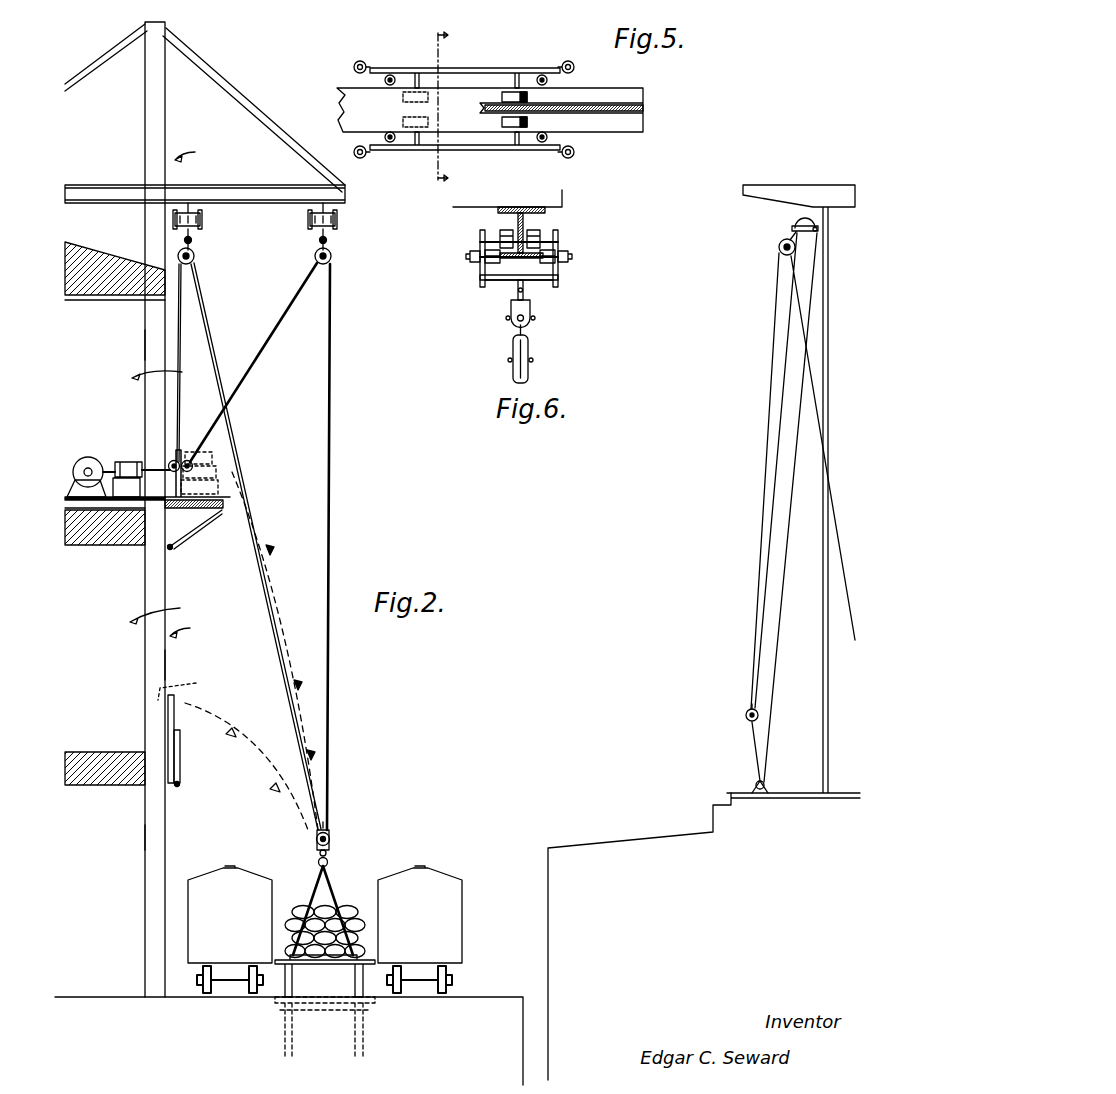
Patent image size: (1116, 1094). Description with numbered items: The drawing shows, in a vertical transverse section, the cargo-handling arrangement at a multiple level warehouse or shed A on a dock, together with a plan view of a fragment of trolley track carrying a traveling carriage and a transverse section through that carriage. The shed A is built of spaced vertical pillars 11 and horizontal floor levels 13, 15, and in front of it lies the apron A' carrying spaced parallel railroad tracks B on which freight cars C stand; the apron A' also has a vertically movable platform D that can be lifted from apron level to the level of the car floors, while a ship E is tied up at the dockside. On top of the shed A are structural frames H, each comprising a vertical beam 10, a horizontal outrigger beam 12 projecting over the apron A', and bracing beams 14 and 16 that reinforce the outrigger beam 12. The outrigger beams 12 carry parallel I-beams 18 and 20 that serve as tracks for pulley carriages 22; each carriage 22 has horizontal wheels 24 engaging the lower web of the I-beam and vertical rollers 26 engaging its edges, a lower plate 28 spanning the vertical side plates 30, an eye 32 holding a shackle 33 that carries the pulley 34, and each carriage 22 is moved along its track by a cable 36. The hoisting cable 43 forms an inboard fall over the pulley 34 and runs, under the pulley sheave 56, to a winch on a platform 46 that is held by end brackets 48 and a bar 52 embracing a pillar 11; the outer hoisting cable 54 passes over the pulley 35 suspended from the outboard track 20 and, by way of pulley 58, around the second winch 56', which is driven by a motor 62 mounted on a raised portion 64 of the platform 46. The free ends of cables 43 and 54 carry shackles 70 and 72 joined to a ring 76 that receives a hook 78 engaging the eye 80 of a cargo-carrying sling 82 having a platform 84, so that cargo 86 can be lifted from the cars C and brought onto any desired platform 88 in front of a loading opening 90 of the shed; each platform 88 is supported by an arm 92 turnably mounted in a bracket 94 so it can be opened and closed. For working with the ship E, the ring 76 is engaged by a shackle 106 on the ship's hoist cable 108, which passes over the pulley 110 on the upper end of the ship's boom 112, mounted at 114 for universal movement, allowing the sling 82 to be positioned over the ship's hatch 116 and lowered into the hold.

In FIG. 2, the vertical beam 10 is at (143, 126).
In FIG. 2, the vertical pillar 11 is at (145, 838).
In FIG. 2, the horizontal outrigger beam 12 is at (250, 202).
In FIG. 6, the horizontal outrigger beam 12 is at (565, 200).
In FIG. 2, the horizontal floor level 13 is at (112, 786).
In FIG. 2, the bracing beam 14 is at (266, 147).
In FIG. 2, the horizontal floor level 15 is at (138, 545).
In FIG. 2, the bracing beam 16 is at (95, 90).
In FIG. 2, the inner I-beam track 18 is at (202, 218).
In FIG. 5, the inner I-beam track 18 is at (590, 95).
In FIG. 6, the inner I-beam track 18 is at (495, 210).
In FIG. 2, the outboard I-beam track 20 is at (337, 214).
In FIG. 5, the pulley carriage 22 is at (403, 66).
In FIG. 6, the pulley carriage 22 is at (555, 228).
In FIG. 5, the horizontal wheel 24 is at (500, 121).
In FIG. 6, the horizontal wheel 24 is at (500, 232).
In FIG. 5, the vertical roller 26 is at (393, 143).
In FIG. 6, the vertical roller 26 is at (483, 268).
In FIG. 5, the lower plate 28 is at (488, 150).
In FIG. 6, the lower plate 28 is at (505, 277).
In FIG. 6, the vertical side plate 30 is at (558, 278).
In FIG. 6, the eye 32 is at (525, 296).
In FIG. 6, the shackle 33 is at (530, 322).
In FIG. 2, the pulley 34 is at (195, 256).
In FIG. 6, the pulley 34 is at (512, 350).
In FIG. 2, the pulley 35 is at (332, 256).
In FIG. 6, the cable 36 is at (482, 288).
In FIG. 2, the hoisting cable 43 is at (284, 708).
In FIG. 2, the platform 46 is at (96, 510).
In FIG. 2, the end bracket 48 is at (124, 512).
In FIG. 2, the bar 52 is at (185, 478).
In FIG. 2, the outer hoisting cable 54 is at (329, 548).
In FIG. 2, the pulley sheave 56 is at (176, 442).
In FIG. 2, the second winch 56' is at (85, 461).
In FIG. 2, the pulley 58 is at (192, 462).
In FIG. 2, the motor 62 is at (120, 460).
In FIG. 2, the raised portion 64 is at (116, 462).
In FIG. 2, the shackle 70 is at (314, 838).
In FIG. 2, the shackle 72 is at (327, 830).
In FIG. 2, the ring 76 is at (331, 840).
In FIG. 2, the hook 78 is at (318, 852).
In FIG. 2, the eye 80 is at (328, 862).
In FIG. 2, the cargo-carrying sling 82 is at (338, 900).
In FIG. 2, the platform 84 is at (362, 956).
In FIG. 2, the cargo 86 is at (220, 484).
In FIG. 2, the platform 88 is at (225, 505).
In FIG. 2, the loading opening 90 is at (168, 490).
In FIG. 2, the supporting arm 92 is at (182, 748).
In FIG. 2, the bracket 94 is at (180, 786).
In FIG. 2, the shackle 106 is at (745, 719).
In FIG. 2, the ship's hoist cable 108 is at (763, 521).
In FIG. 2, the pulley 110 is at (778, 247).
In FIG. 2, the ship's boom 112 is at (766, 664).
In FIG. 2, the boom mounting 114 is at (755, 785).
In FIG. 2, the ship's hatch 116 is at (774, 810).
In FIG. 2, the structural frame H is at (194, 150).
In FIG. 2, the warehouse or shed A is at (187, 626).
In FIG. 2, the apron A' is at (289, 1024).
In FIG. 2, the railroad tracks B is at (428, 996).
In FIG. 2, the freight car C is at (325, 914).
In FIG. 2, the vertically movable platform D is at (336, 1006).
In FIG. 2, the ship E is at (612, 840).